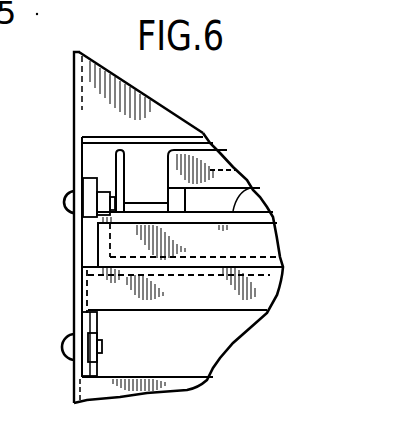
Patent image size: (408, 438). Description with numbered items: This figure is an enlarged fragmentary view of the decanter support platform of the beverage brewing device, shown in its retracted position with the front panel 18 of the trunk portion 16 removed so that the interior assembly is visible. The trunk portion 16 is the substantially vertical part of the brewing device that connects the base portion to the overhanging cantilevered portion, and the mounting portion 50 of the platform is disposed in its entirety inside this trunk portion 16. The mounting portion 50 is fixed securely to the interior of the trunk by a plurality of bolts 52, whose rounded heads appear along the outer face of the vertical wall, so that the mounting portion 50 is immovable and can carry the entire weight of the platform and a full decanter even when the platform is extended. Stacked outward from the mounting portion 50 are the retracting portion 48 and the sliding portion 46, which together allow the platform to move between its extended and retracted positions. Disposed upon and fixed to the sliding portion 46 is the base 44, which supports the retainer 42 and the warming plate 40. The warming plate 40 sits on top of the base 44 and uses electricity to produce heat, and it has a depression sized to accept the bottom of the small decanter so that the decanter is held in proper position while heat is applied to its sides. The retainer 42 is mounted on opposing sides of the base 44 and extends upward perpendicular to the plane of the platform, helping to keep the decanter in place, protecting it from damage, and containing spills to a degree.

The trunk portion 16 is at (208, 116).
The front panel 18 is at (87, 118).
The warming plate 40 is at (211, 157).
The retainer 42 is at (117, 165).
The base 44 is at (252, 187).
The sliding portion 46 is at (100, 215).
The retracting portion 48 is at (90, 263).
The mounting portion 50 is at (100, 298).
The bolts 52 is at (67, 203).